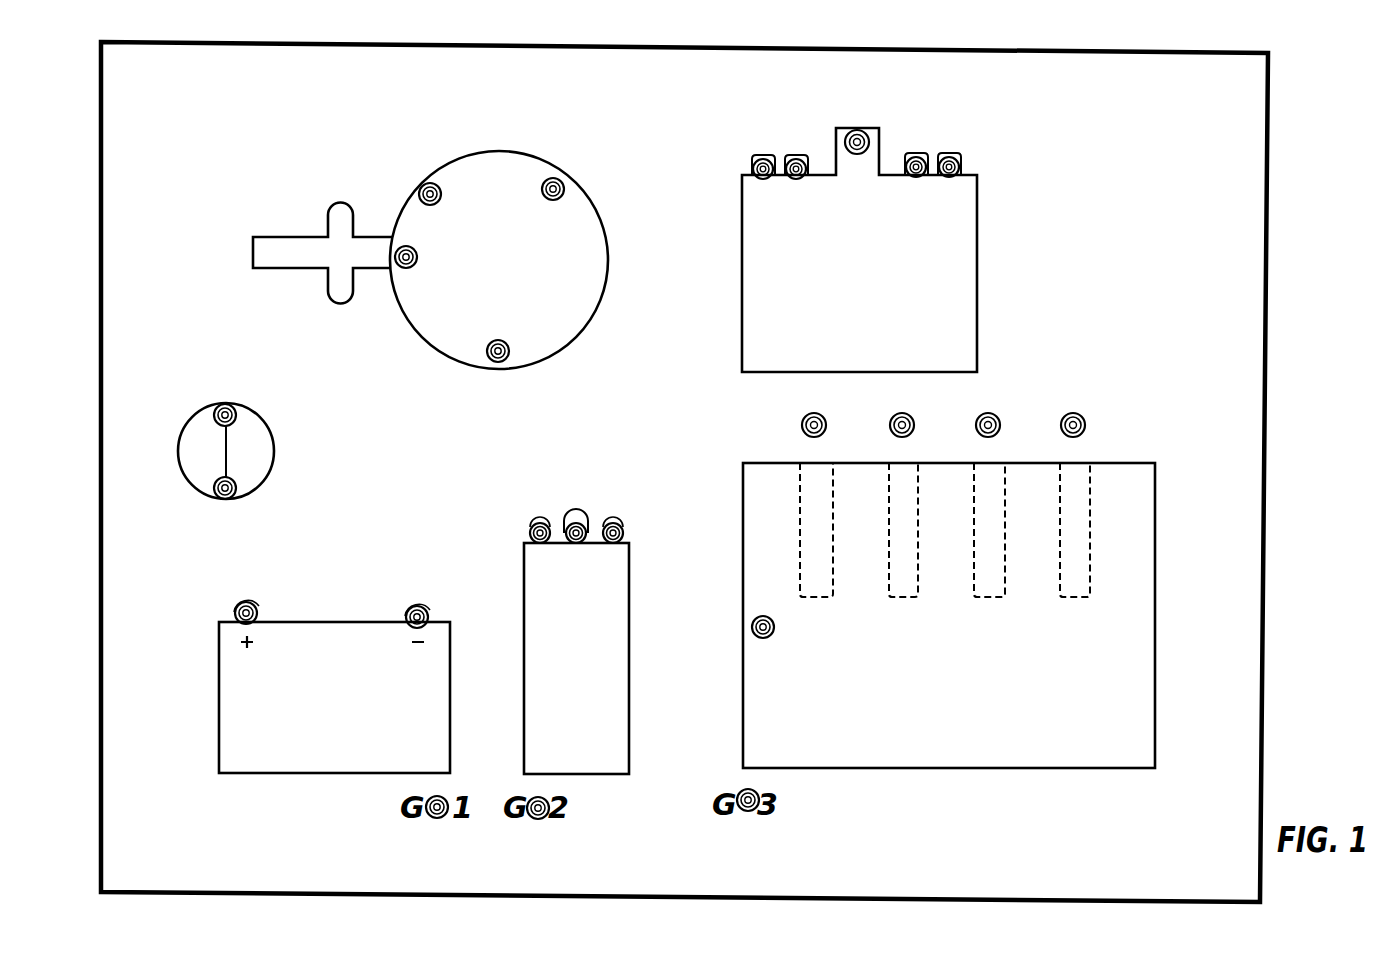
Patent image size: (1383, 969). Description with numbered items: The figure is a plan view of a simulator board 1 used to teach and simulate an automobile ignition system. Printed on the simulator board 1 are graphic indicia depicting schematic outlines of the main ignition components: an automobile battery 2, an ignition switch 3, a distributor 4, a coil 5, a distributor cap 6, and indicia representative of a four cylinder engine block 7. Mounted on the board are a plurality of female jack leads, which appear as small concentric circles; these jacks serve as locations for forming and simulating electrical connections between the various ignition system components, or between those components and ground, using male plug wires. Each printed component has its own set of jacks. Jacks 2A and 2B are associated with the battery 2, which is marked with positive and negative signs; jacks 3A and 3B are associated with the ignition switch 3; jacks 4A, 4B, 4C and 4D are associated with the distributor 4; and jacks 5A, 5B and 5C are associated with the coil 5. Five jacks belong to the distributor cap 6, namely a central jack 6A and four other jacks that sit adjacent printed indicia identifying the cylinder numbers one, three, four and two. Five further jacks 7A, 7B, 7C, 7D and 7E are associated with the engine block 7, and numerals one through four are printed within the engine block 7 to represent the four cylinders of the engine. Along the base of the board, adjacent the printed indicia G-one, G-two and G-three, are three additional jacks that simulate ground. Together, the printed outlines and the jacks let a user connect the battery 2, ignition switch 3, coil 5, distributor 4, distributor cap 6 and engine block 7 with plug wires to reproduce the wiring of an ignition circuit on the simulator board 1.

The simulator board 1 is at (1282, 283).
The automobile battery 2 is at (330, 631).
The jack 2A is at (256, 612).
The jack 2B is at (429, 613).
The ignition switch 3 is at (265, 462).
The jack 3A is at (235, 409).
The jack 3B is at (239, 493).
The distributor 4 is at (504, 159).
The jack 4A is at (418, 200).
The jack 4B is at (410, 266).
The jack 4C is at (498, 362).
The jack 4D is at (570, 184).
The coil 5 is at (631, 637).
The jack 5A is at (539, 520).
The jack 5B is at (576, 518).
The jack 5C is at (613, 520).
The distributor cap 6 is at (742, 226).
The central jack 6A is at (862, 135).
The engine block 7 is at (1150, 652).
The jack 7A is at (752, 629).
The jack 7B is at (812, 414).
The jack 7C is at (902, 414).
The jack 7D is at (988, 414).
The jack 7E is at (1073, 414).